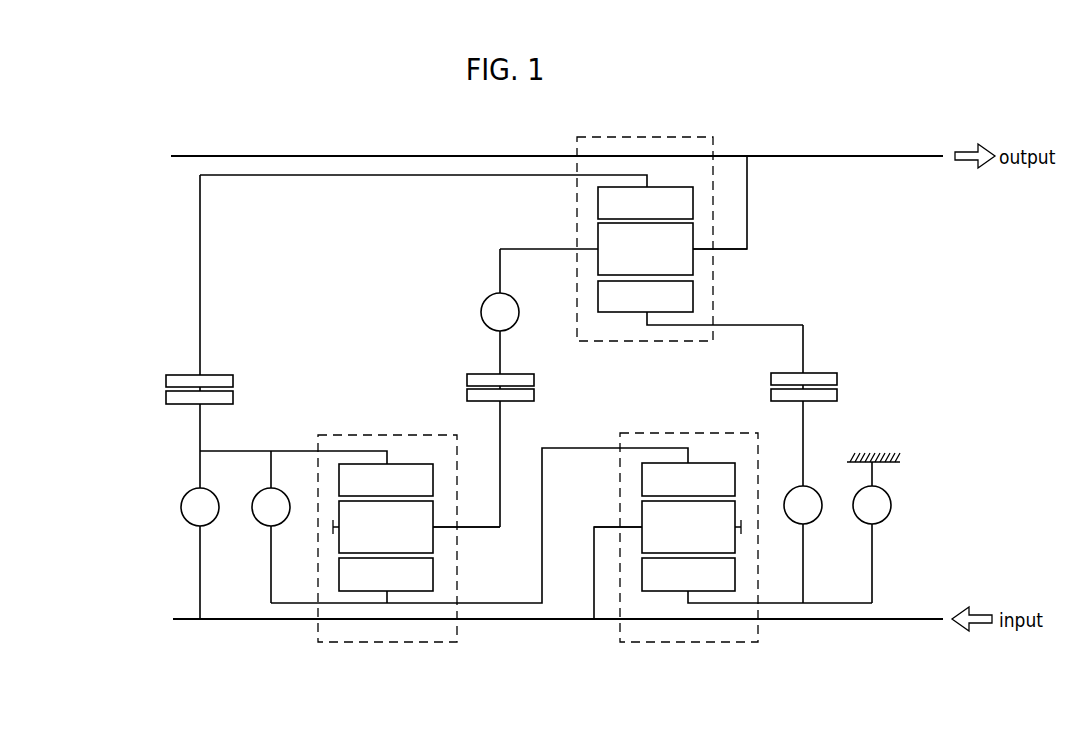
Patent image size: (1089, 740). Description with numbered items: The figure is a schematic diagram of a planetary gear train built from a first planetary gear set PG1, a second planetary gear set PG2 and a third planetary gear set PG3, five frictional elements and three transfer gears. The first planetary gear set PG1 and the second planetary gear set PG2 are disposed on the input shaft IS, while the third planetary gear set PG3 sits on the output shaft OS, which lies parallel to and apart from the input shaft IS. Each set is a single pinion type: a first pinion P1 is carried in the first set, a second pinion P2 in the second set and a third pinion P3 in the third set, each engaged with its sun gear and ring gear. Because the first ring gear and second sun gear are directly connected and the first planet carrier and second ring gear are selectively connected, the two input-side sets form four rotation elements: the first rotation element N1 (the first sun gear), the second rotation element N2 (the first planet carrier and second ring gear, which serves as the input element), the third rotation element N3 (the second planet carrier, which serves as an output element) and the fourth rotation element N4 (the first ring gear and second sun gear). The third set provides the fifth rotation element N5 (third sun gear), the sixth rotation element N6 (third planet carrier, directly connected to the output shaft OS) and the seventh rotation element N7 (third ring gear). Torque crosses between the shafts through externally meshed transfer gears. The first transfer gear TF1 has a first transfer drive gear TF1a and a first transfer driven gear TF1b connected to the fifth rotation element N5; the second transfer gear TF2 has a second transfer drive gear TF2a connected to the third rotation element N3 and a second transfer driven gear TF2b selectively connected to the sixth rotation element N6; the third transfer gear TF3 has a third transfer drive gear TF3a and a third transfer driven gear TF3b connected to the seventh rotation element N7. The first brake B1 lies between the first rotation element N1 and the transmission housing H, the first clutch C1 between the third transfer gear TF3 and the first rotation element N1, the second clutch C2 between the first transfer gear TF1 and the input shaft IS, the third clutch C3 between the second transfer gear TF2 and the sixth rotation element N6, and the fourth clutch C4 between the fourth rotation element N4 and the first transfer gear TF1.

The first planetary gear set PG1 is at (688, 652).
The second planetary gear set PG2 is at (385, 652).
The third planetary gear set PG3 is at (663, 132).
The output shaft OS is at (835, 153).
The input shaft IS is at (806, 625).
The first transfer gear TF1 is at (234, 353).
The first transfer drive gear TF1a is at (233, 398).
The first transfer driven gear TF1b is at (233, 381).
The second transfer gear TF2 is at (535, 355).
The second transfer drive gear TF2a is at (534, 396).
The second transfer driven gear TF2b is at (534, 380).
The third transfer gear TF3 is at (838, 353).
The third transfer drive gear TF3a is at (837, 395).
The third transfer driven gear TF3b is at (837, 379).
The first clutch C1 is at (803, 505).
The second clutch C2 is at (200, 507).
The third clutch C3 is at (500, 312).
The fourth clutch C4 is at (271, 507).
The first brake B1 is at (872, 505).
The transmission housing H is at (900, 461).
The first rotation element N1 is at (688, 574).
The second rotation element N2 is at (386, 480).
The third rotation element N3 is at (480, 557).
The fourth rotation element N4 is at (386, 574).
The fifth rotation element N5 is at (645, 203).
The sixth rotation element N6 is at (731, 252).
The seventh rotation element N7 is at (645, 296).
The first pinion P1 is at (688, 527).
The second pinion P2 is at (386, 527).
The third pinion P3 is at (645, 249).